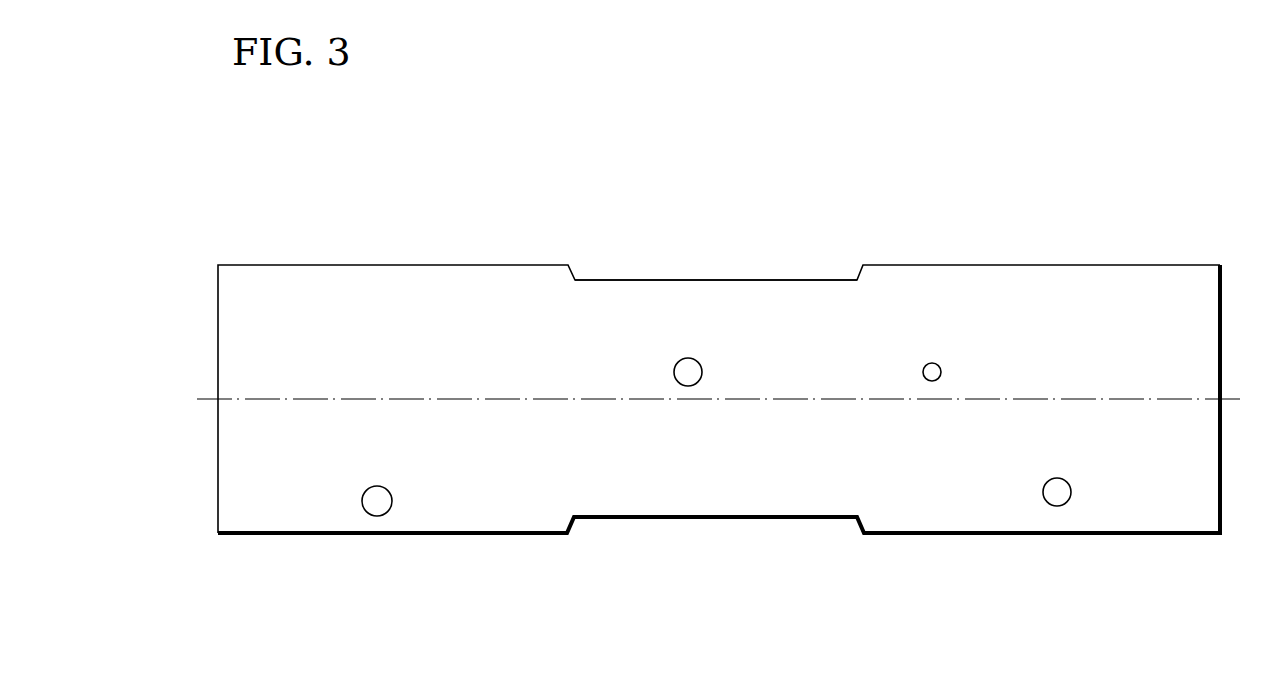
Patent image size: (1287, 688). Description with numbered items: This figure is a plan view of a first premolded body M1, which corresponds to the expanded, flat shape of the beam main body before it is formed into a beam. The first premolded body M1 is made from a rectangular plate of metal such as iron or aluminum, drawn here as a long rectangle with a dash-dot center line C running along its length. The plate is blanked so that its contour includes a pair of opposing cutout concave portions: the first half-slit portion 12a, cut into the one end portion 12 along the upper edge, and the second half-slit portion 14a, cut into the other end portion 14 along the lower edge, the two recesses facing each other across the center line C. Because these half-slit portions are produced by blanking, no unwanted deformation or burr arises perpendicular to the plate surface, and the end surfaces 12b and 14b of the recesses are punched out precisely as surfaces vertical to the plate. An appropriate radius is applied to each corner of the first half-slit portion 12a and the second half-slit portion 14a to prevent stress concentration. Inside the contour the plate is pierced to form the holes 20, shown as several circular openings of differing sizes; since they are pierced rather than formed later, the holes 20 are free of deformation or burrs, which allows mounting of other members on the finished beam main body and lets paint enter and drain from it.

The first premolded body M1 is at (1100, 205).
The one end portion 12 is at (1178, 283).
The first half-slit portion 12a is at (818, 271).
The end surface 12b is at (658, 280).
The other end portion 14 is at (1168, 502).
The second half-slit portion 14a is at (793, 527).
The end surface 14b is at (628, 521).
The holes 20 is at (380, 503).
The center line C is at (1228, 398).